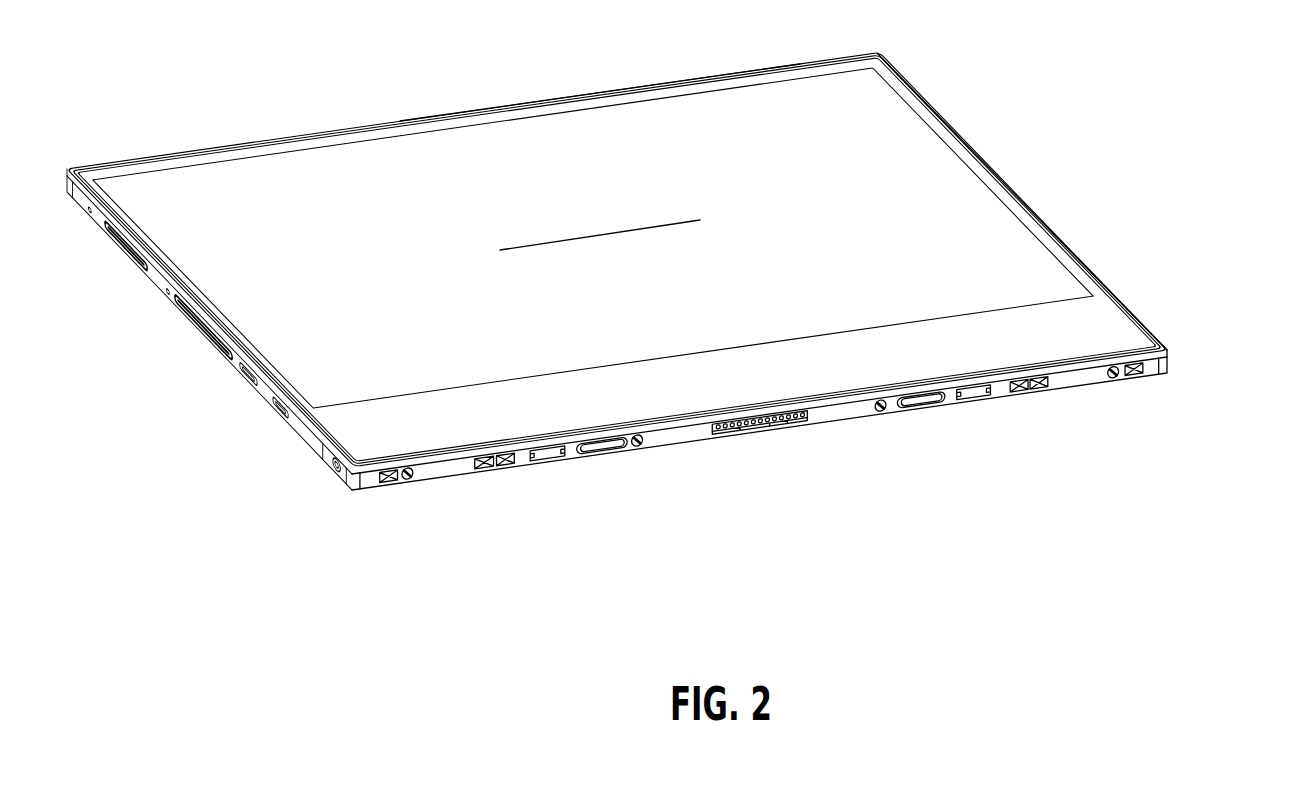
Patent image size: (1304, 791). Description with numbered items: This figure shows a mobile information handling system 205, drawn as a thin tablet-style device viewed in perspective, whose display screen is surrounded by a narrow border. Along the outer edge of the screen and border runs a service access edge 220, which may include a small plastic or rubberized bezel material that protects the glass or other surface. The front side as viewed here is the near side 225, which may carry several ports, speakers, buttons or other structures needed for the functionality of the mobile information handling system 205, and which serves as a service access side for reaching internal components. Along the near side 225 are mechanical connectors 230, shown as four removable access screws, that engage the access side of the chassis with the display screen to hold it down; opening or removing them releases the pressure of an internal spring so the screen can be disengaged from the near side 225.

The mobile information handling system 205 is at (514, 75).
The service access edge 220 is at (1150, 317).
The near side 225 is at (1188, 362).
The mechanical connectors 230 is at (408, 484).